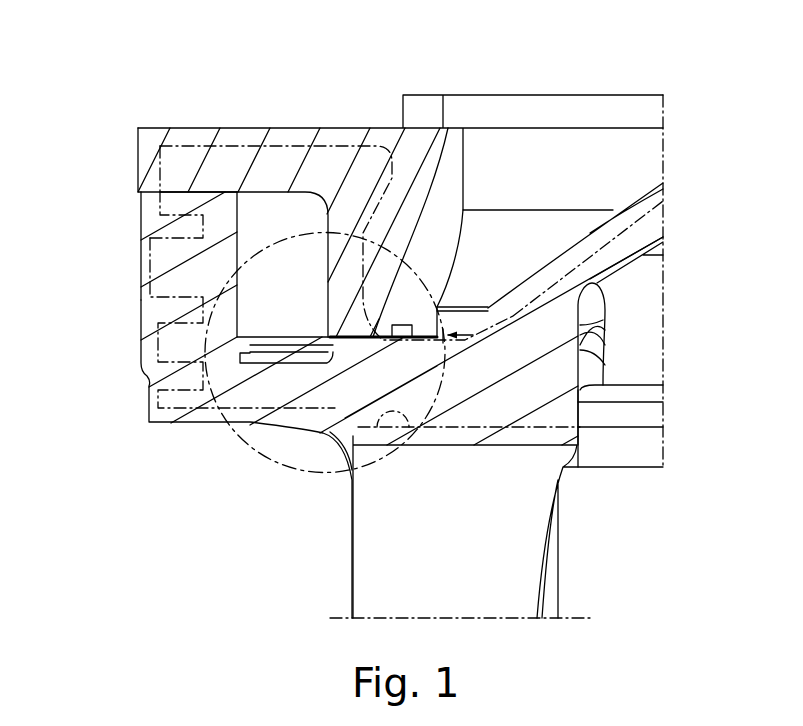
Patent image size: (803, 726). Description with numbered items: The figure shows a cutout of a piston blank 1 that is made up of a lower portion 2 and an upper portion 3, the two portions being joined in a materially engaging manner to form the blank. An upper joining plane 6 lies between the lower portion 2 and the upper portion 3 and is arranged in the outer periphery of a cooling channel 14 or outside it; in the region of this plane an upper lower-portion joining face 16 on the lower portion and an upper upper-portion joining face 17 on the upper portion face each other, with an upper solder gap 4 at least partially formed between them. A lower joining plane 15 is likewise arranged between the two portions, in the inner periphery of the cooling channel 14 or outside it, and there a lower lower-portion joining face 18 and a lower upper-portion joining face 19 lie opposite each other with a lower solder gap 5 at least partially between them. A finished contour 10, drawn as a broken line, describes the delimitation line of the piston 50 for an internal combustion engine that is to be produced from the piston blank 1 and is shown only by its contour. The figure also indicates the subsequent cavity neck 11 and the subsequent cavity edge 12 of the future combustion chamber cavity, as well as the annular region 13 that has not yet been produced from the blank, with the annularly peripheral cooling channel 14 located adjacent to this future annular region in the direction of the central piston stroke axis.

The piston blank 1 is at (631, 86).
The lower portion 2 is at (130, 383).
The upper portion 3 is at (138, 133).
The upper solder gap 4 is at (220, 190).
The lower solder gap 5 is at (362, 337).
The upper joining plane 6 is at (128, 192).
The finished contour 10 is at (337, 142).
The cavity neck 11 is at (372, 233).
The cavity edge 12 is at (393, 153).
The annular region 13 is at (122, 316).
The cooling channel 14 is at (318, 238).
The lower joining plane 15 is at (420, 400).
The upper lower-portion joining face 16 is at (167, 196).
The upper upper-portion joining face 17 is at (170, 190).
The lower lower-portion joining face 18 is at (478, 335).
The lower upper-portion joining face 19 is at (605, 347).
The piston 50 is at (277, 143).